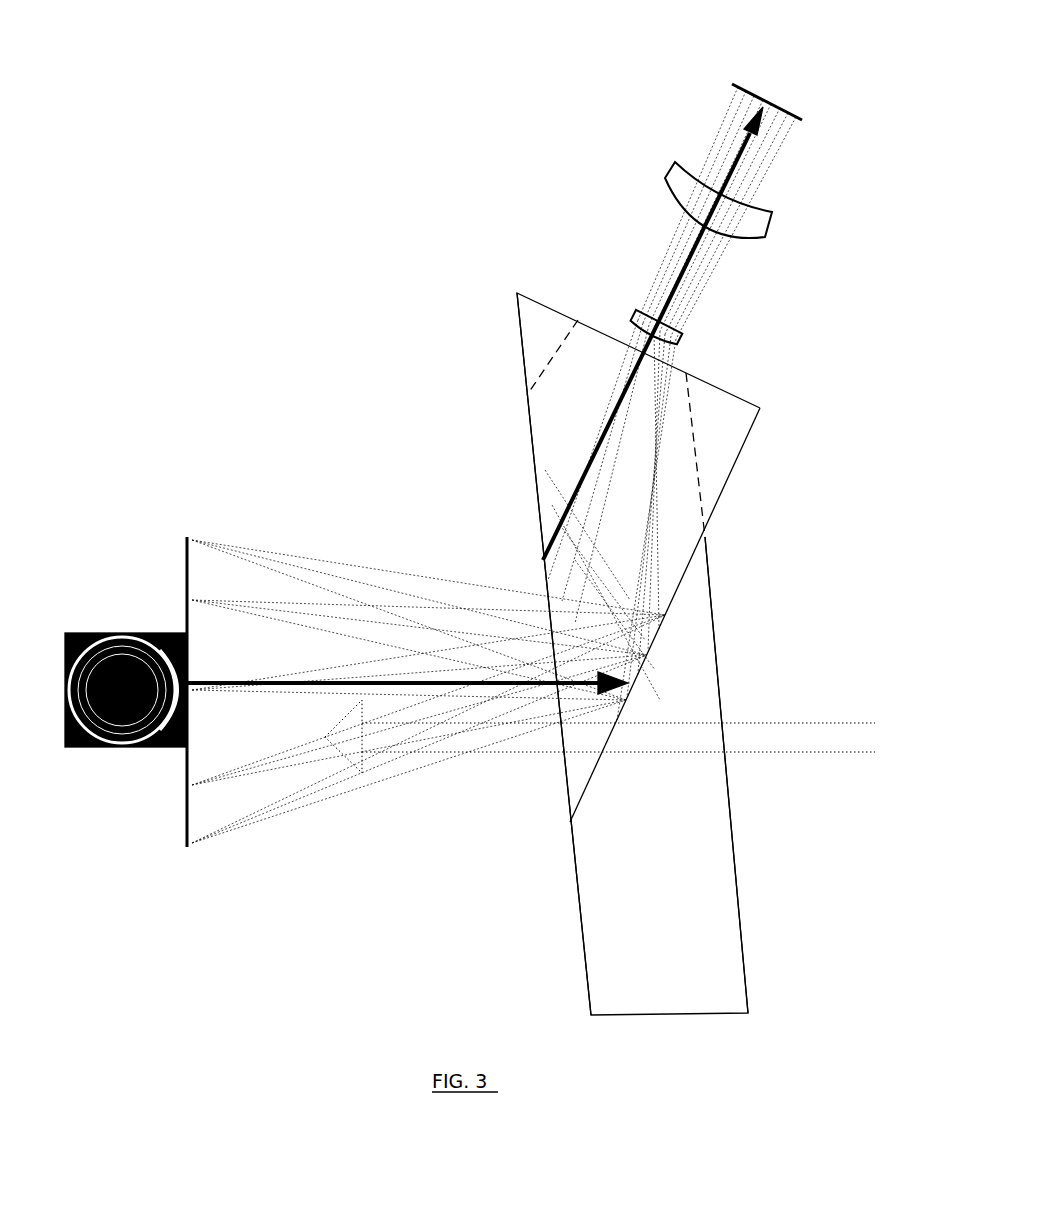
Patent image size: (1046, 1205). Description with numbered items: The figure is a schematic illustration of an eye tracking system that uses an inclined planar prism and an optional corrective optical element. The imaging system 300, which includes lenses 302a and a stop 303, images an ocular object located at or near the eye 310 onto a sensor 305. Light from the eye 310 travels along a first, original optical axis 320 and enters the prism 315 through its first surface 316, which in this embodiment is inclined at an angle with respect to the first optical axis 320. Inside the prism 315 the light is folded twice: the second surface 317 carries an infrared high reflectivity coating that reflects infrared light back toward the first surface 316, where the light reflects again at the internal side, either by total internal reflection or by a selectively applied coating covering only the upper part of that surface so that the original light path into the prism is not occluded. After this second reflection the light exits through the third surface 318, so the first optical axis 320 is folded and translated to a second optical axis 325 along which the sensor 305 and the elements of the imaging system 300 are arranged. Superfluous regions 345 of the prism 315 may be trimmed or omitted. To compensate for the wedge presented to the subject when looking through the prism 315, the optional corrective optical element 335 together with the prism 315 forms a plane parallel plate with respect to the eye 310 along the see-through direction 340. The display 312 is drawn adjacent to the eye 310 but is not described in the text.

The imaging system 300 is at (768, 318).
The lens 302a is at (700, 323).
The stop 303 is at (637, 305).
The sensor 305 is at (712, 97).
The eye 310 is at (150, 633).
The display 312 is at (197, 852).
The prism 315 is at (545, 428).
The first surface 316 is at (560, 788).
The second surface 317 is at (655, 632).
The third surface 318 is at (593, 330).
The first optical axis 320 is at (290, 687).
The second optical axis 325 is at (693, 240).
The corrective optical element 335 is at (702, 704).
The see-through direction 340 is at (655, 750).
The superfluous regions 345 is at (702, 450).